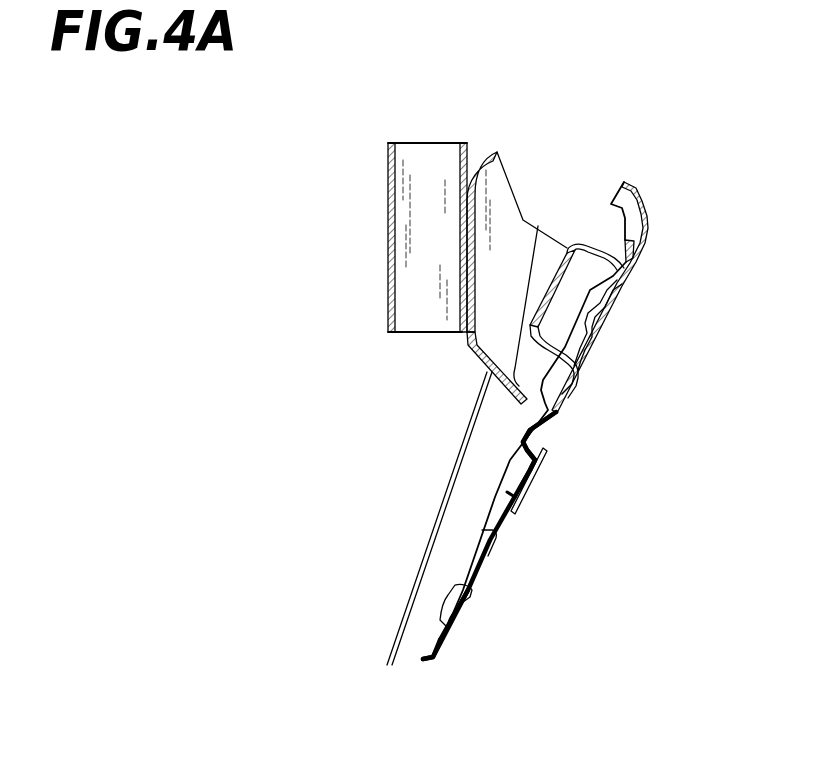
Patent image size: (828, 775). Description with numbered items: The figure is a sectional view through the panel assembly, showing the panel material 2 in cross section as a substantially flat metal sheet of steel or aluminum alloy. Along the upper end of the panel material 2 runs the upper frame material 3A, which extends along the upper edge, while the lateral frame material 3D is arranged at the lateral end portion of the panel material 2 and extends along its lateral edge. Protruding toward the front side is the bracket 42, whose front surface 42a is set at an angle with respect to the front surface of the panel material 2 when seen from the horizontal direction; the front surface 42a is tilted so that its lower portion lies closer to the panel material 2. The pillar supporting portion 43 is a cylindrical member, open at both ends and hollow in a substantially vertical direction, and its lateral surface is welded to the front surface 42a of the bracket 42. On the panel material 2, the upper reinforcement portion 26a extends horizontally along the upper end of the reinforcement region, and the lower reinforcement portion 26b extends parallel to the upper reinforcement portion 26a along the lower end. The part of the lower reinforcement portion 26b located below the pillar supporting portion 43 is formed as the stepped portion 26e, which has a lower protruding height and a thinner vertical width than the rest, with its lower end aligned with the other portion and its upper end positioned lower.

The panel material 2 is at (637, 192).
The upper frame material 3A is at (585, 248).
The lateral frame material 3D is at (450, 492).
The upper reinforcement portion 26a is at (525, 437).
The lower reinforcement portion 26b is at (453, 590).
The stepped portion 26e is at (457, 613).
The bracket 42 is at (492, 238).
The front surface of bracket 42a is at (465, 165).
The pillar supporting portion 43 is at (388, 221).